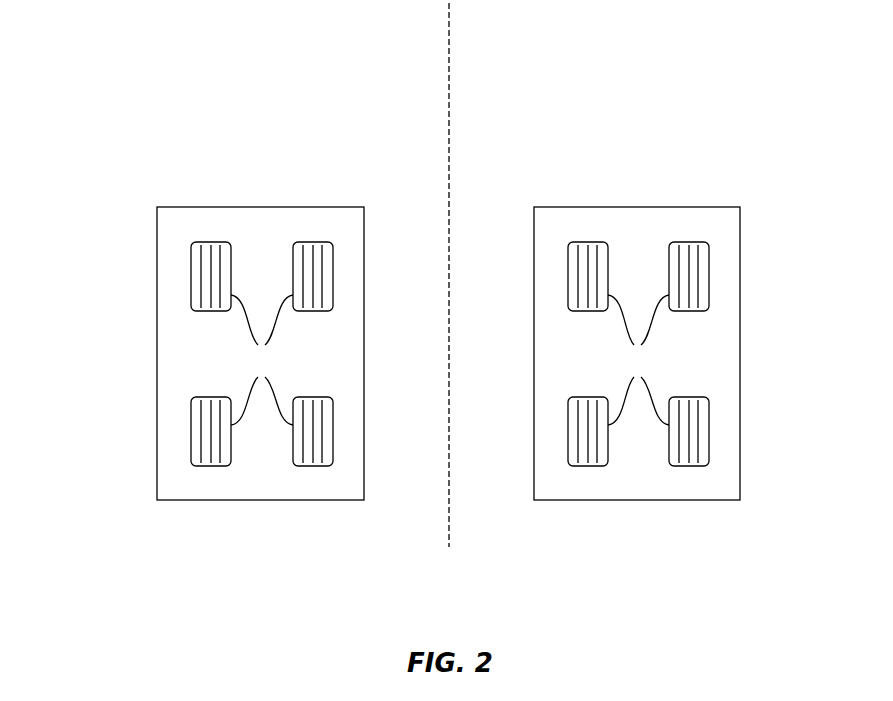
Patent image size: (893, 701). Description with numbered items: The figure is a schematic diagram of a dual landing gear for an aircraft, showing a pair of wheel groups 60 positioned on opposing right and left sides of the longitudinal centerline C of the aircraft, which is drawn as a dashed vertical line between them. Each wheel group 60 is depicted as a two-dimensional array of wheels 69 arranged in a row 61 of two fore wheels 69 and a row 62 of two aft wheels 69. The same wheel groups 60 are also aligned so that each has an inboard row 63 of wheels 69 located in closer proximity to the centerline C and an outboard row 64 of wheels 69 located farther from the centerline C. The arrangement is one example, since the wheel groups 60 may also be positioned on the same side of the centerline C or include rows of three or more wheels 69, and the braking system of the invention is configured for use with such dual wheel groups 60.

The wheel group 60 is at (135, 212).
The row of fore wheels 61 is at (130, 278).
The row of aft wheels 62 is at (130, 432).
The inboard row 63 is at (314, 183).
The outboard row 64 is at (211, 183).
The wheel 69 is at (450, 360).
The longitudinal centerline C is at (449, 47).